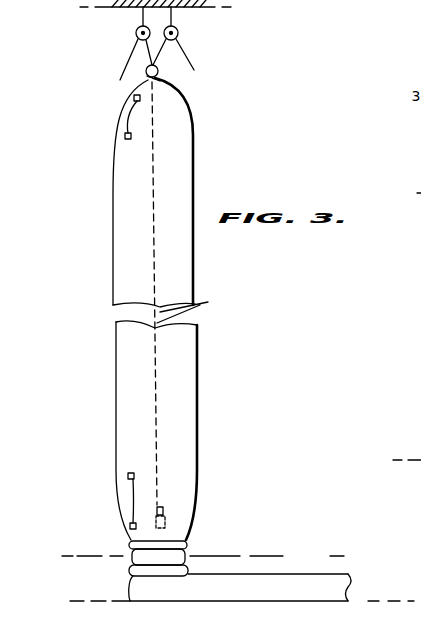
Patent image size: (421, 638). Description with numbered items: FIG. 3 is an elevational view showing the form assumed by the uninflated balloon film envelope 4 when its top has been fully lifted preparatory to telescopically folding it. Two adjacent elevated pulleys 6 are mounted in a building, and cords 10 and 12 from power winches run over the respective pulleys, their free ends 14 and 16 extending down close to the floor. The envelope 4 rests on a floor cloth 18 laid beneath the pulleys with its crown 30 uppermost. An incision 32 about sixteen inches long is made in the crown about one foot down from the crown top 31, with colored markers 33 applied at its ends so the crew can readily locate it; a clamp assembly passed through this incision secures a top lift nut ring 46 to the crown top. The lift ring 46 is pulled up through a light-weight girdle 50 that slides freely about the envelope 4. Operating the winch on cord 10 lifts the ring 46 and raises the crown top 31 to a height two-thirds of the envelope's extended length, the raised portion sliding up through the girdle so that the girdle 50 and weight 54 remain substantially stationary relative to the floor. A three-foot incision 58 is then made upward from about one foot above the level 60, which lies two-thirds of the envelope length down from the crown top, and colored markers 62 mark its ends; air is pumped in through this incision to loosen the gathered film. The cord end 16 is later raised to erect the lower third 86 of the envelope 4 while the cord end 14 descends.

The envelope 4 is at (150, 309).
The pulleys 6 is at (155, 20).
The cord 10 is at (128, 50).
The cord 12 is at (188, 50).
The free end of cord 14 is at (146, 66).
The top lift nut ring 46 is at (147, 76).
The crown top 31 is at (158, 79).
The crown 30 is at (190, 112).
The colored markers 33 is at (133, 99).
The incision 32 is at (126, 120).
The colored markers 62 is at (128, 474).
The incision 58 is at (133, 498).
The free end of cord 16 is at (163, 508).
The weight 54 is at (166, 522).
The girdle 50 is at (190, 556).
The lower third of envelope 86 is at (324, 580).
The level 60 is at (74, 556).
The floor cloth 18 is at (105, 601).